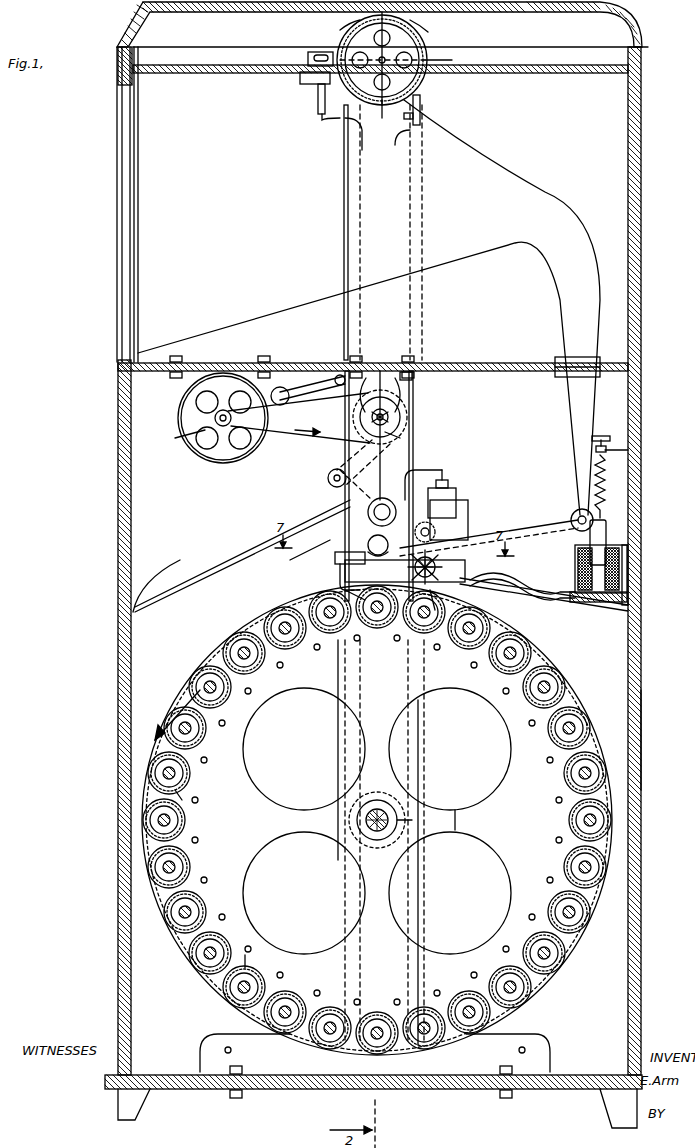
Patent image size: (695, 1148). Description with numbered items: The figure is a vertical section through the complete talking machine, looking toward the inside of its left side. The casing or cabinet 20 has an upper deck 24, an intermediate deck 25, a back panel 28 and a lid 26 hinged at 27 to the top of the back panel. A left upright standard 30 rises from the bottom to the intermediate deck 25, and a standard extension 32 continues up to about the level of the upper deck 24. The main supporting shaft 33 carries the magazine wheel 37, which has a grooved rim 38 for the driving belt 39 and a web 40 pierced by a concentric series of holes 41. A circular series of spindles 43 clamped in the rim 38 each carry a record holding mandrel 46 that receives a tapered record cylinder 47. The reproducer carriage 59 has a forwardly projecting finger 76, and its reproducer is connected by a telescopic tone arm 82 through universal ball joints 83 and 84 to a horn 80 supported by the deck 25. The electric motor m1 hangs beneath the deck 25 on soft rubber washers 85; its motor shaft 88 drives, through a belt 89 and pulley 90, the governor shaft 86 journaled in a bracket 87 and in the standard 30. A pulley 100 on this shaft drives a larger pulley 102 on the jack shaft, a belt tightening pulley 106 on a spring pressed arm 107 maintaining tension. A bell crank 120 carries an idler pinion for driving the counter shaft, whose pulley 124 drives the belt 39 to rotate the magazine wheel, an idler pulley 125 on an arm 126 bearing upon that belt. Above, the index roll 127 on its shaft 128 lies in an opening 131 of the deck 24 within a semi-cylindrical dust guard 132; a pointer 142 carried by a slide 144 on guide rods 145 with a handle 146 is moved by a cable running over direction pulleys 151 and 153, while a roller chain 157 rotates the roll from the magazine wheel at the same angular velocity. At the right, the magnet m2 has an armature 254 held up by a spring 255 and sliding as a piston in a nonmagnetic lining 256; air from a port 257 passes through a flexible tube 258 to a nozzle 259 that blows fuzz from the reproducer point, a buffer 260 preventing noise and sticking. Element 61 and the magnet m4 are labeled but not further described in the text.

The casing or cabinet 20 is at (641, 240).
The upper deck 24 is at (590, 73).
The intermediate deck 25 is at (508, 355).
The lid 26 is at (600, 11).
The hinge 27 is at (648, 52).
The back panel 28 is at (641, 708).
The left upright standard 30 is at (410, 740).
The standard extension 32 is at (365, 320).
The main supporting shaft 33 is at (389, 820).
The magazine wheel 37 is at (455, 812).
The grooved rim 38 is at (190, 690).
The driving belt 39 is at (490, 605).
The web 40 is at (265, 693).
The holes 41 is at (215, 740).
The spindles 43 is at (470, 636).
The record holding mandrel 46 is at (187, 795).
The record cylinder 47 is at (240, 954).
The reproducer carriage 59 is at (355, 625).
The door 61 is at (130, 232).
The finger 76 is at (330, 522).
The horn 80 is at (560, 260).
The tone arm 82 is at (520, 530).
The universal ball joint 83 is at (368, 546).
The universal ball joint 84 is at (573, 516).
The soft rubber washers 85 is at (262, 356).
The governor shaft 86 is at (388, 417).
The bracket 87 is at (412, 378).
The motor shaft 88 is at (223, 426).
The belt 89 is at (300, 435).
The pulley 90 is at (398, 405).
The pulley 100 is at (400, 436).
The larger pulley 102 is at (310, 550).
The belt tightening pulley 106 is at (328, 482).
The spring pressed arm 107 is at (340, 474).
The bell crank 120 is at (442, 470).
The pulley 124 is at (392, 498).
The idler pulley 125 is at (435, 560).
The arm 126 is at (415, 545).
The index roll 127 is at (379, 115).
The shaft 128 is at (405, 55).
The opening 131 is at (451, 57).
The semi-cylindrical dust guard 132 is at (423, 100).
The pointer 142 is at (339, 21).
The slide 144 is at (318, 96).
The guide rods 145 is at (312, 72).
The handle 146 is at (322, 48).
The direction pulley 151 is at (320, 116).
The direction pulley 153 is at (420, 128).
The link belt or roller chain 157 is at (412, 310).
The armature 254 is at (590, 538).
The spring 255 is at (600, 505).
The nonmagnetic lining 256 is at (578, 576).
The port 257 is at (600, 602).
The flexible portion 258 is at (520, 580).
The nozzle 259 is at (425, 620).
The buffer 260 is at (628, 578).
The electric motor m1 is at (178, 440).
The magnet m2 is at (578, 555).
The magnet m4 is at (468, 512).